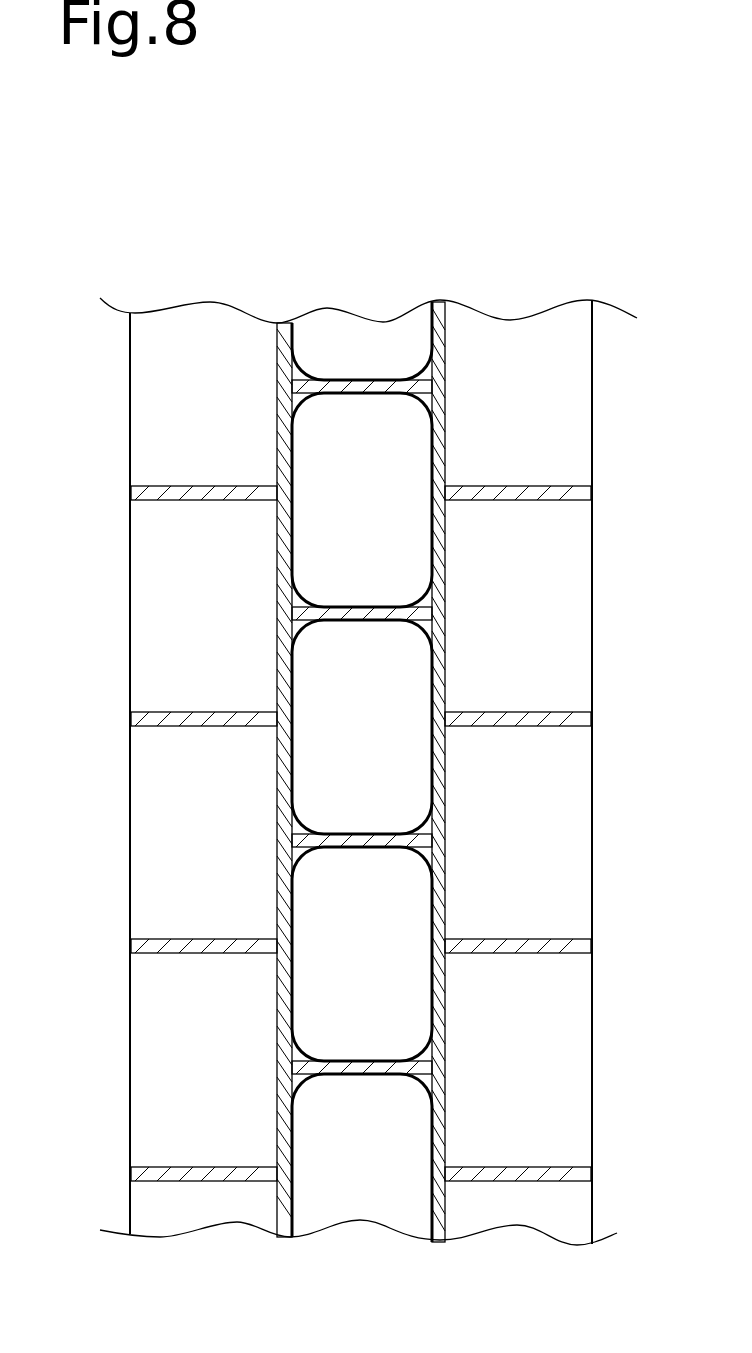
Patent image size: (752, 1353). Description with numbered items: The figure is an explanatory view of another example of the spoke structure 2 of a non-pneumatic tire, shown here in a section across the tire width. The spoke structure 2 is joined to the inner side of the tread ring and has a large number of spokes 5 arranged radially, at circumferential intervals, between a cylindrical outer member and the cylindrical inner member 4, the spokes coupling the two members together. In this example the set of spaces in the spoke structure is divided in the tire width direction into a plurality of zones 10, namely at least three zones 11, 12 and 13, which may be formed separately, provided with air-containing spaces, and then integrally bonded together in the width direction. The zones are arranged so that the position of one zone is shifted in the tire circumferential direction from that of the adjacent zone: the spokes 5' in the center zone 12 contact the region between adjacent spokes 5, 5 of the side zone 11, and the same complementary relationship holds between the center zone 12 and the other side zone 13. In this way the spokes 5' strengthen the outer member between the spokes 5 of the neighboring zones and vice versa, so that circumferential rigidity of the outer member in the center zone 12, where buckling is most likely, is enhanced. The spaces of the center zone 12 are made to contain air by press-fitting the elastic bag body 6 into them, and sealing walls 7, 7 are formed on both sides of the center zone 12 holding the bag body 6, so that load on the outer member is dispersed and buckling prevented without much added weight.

The spoke structure 2 is at (549, 304).
The cylindrical inner member 4 is at (152, 340).
The spoke 5 is at (365, 804).
The spoke in the center zone 5' is at (358, 718).
The elastic bag body 6 is at (412, 447).
The sealing wall 7 is at (277, 545).
The zones 10 is at (547, 193).
The zone 11 is at (212, 347).
The center zone 12 is at (358, 351).
The zone 13 is at (515, 361).